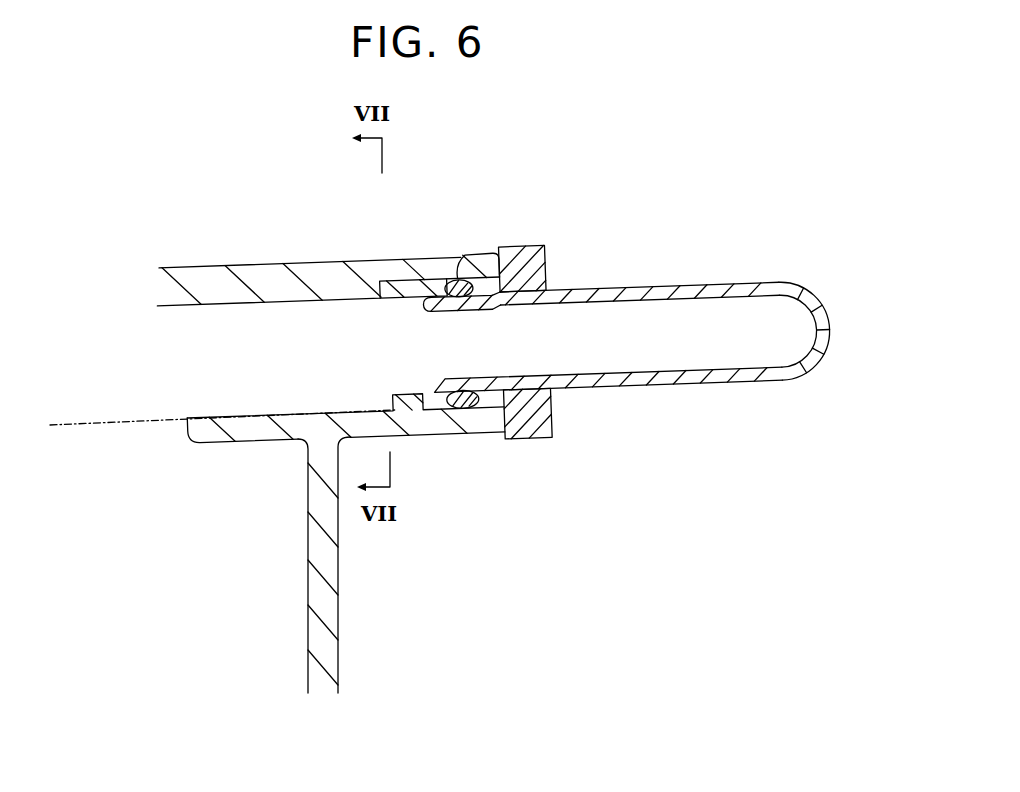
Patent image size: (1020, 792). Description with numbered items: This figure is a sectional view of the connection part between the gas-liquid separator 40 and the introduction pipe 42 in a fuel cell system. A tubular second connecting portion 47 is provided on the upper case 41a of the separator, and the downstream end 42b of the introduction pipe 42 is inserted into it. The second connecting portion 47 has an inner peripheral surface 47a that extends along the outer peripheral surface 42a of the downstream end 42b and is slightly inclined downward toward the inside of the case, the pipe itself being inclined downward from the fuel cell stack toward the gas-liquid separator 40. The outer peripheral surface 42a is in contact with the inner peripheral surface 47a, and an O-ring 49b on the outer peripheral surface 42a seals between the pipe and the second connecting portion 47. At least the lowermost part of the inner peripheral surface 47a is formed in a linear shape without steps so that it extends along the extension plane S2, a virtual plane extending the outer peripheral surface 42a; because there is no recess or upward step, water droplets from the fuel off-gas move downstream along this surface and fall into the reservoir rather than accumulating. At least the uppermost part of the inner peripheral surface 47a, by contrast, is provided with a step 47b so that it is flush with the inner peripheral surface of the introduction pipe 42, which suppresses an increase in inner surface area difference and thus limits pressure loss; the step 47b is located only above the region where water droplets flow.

The gas-liquid separator 40 is at (222, 160).
The upper case 41a is at (326, 596).
The introduction pipe 42 is at (667, 284).
The outer peripheral surface 42a is at (417, 411).
The downstream end 42b is at (392, 400).
The second connecting portion 47 is at (307, 270).
The inner peripheral surface 47a is at (297, 411).
The step 47b is at (385, 266).
The O-ring 49b is at (463, 277).
The extension plane S2 is at (96, 421).